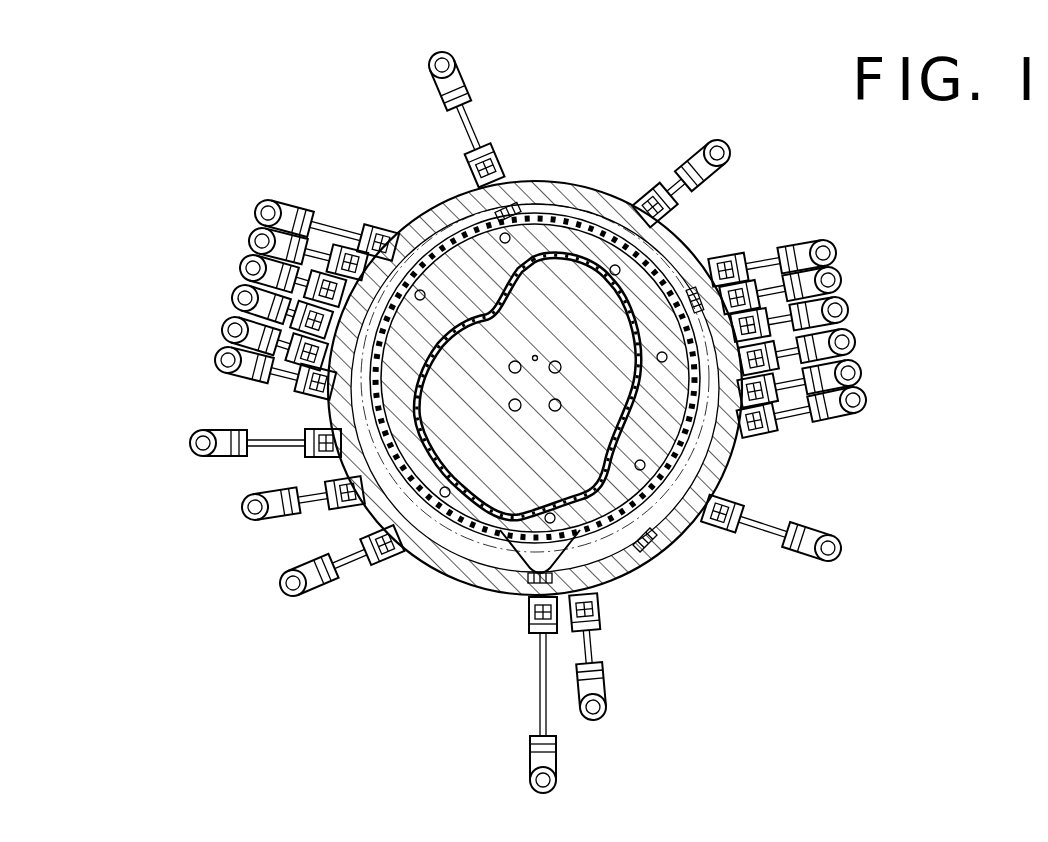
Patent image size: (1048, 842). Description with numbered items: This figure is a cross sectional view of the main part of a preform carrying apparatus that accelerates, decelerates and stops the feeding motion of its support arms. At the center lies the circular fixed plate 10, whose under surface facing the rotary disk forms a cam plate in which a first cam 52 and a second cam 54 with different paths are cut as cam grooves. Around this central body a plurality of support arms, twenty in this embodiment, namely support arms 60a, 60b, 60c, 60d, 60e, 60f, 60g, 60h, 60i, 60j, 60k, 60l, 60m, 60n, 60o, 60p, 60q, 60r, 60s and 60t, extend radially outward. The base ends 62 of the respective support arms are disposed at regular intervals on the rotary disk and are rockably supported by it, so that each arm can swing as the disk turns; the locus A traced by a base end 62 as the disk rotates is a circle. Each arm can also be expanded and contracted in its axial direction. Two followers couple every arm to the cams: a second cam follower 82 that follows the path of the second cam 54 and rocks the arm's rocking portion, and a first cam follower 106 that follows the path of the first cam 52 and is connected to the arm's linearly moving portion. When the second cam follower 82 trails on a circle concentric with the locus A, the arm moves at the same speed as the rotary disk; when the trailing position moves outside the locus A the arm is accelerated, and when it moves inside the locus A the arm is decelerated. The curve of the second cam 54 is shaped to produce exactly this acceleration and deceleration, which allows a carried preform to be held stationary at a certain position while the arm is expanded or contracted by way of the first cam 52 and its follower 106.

The fixed plate 10 is at (688, 533).
The first cam 52 is at (655, 545).
The second cam 54 is at (530, 578).
The base end 62 is at (578, 218).
The second cam follower 82 is at (545, 235).
The first cam follower 106 is at (510, 205).
The locus of movement of the base end A is at (727, 477).
The support arm 60a is at (255, 522).
The support arm 60b is at (203, 458).
The support arm 60c is at (215, 361).
The support arm 60d is at (222, 332).
The support arm 60e is at (232, 300).
The support arm 60f is at (241, 264).
The support arm 60g is at (250, 232).
The support arm 60h is at (276, 202).
The support arm 60i is at (460, 82).
The support arm 60j is at (730, 156).
The support arm 60k is at (836, 248).
The support arm 60l is at (840, 278).
The support arm 60m is at (849, 309).
The support arm 60n is at (857, 342).
The support arm 60o is at (863, 374).
The support arm 60p is at (868, 401).
The support arm 60q is at (843, 548).
The support arm 60r is at (607, 705).
The support arm 60s is at (558, 778).
The support arm 60t is at (295, 598).